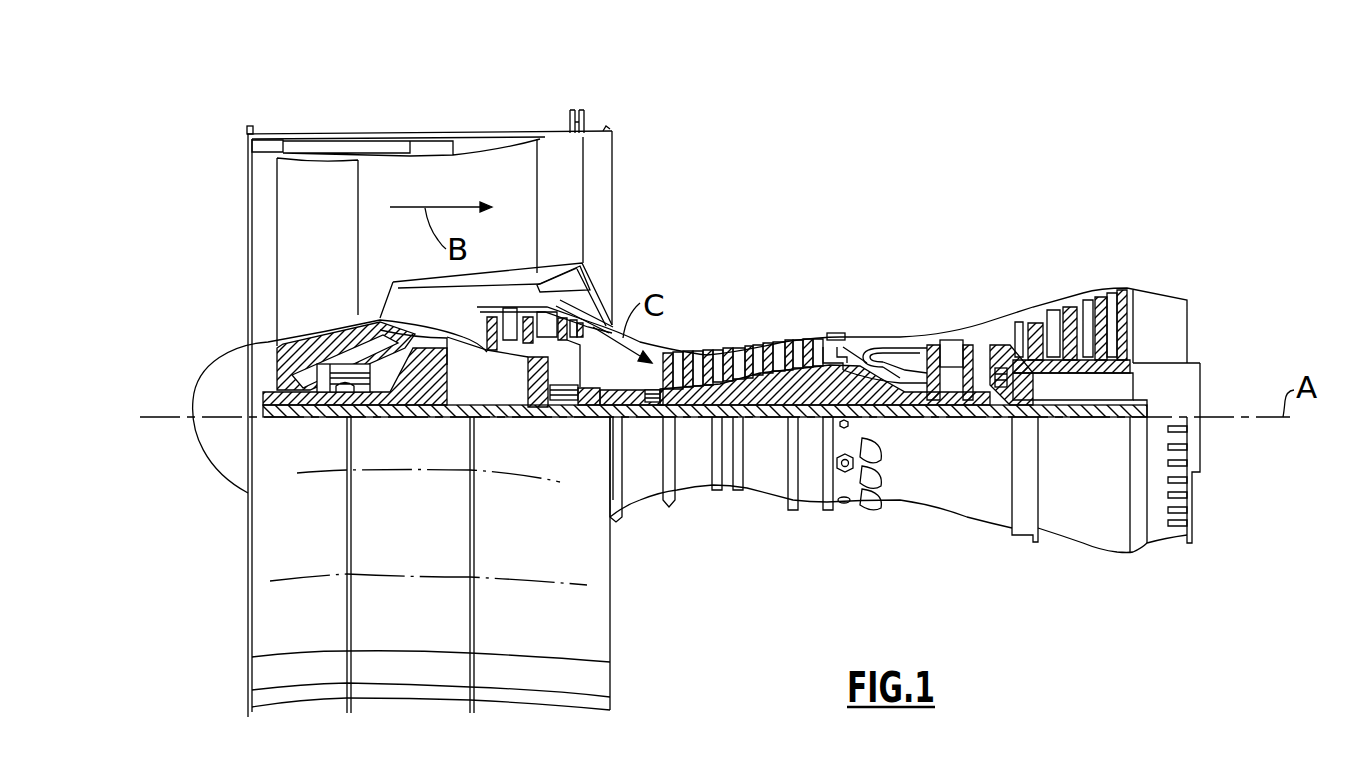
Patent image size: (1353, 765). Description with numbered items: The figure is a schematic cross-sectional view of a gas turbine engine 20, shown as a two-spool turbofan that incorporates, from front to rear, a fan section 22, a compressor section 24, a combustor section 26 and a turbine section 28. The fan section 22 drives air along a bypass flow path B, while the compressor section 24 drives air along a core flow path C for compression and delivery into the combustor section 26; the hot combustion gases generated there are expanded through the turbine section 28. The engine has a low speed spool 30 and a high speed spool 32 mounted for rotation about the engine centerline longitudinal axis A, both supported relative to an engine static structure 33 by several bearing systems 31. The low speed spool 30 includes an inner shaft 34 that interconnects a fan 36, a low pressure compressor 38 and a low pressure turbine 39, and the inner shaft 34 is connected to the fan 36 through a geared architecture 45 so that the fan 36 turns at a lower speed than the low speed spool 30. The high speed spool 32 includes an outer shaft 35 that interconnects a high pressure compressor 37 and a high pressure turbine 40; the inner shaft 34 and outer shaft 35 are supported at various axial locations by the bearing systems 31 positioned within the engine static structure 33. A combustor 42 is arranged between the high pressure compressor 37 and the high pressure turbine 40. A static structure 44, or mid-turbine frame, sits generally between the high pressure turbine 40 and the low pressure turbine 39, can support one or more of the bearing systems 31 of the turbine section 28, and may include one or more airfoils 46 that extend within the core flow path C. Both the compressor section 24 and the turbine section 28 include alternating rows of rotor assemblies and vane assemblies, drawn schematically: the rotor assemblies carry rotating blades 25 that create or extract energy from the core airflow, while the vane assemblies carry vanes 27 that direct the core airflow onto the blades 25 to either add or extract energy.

The gas turbine engine 20 is at (891, 179).
The fan section 22 is at (359, 124).
The compressor section 24 is at (665, 315).
The rotating blades 25 is at (490, 317).
The combustor section 26 is at (887, 305).
The vanes 27 is at (514, 317).
The turbine section 28 is at (1036, 272).
The low speed spool 30 is at (769, 428).
The bearing systems 31 is at (333, 386).
The high speed spool 32 is at (815, 378).
The engine static structure 33 is at (809, 512).
The inner shaft 34 is at (628, 418).
The outer shaft 35 is at (888, 398).
The fan 36 is at (332, 260).
The high pressure compressor 37 is at (743, 383).
The low pressure compressor 38 is at (574, 268).
The low pressure turbine 39 is at (1073, 300).
The high pressure turbine 40 is at (948, 338).
The combustor 42 is at (883, 361).
The static structure (mid-turbine frame) 44 is at (997, 316).
The geared architecture 45 is at (436, 390).
The airfoils 46 is at (1000, 352).